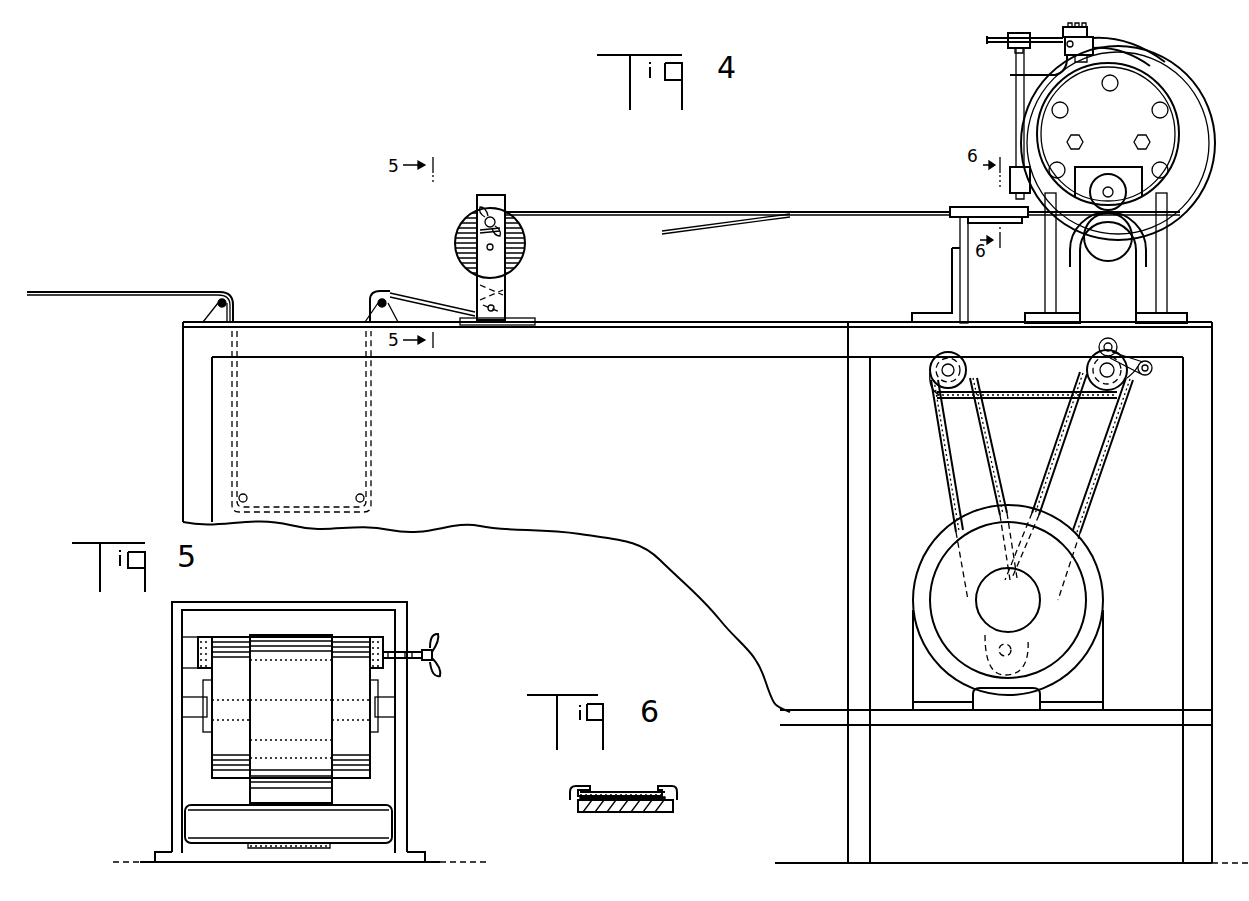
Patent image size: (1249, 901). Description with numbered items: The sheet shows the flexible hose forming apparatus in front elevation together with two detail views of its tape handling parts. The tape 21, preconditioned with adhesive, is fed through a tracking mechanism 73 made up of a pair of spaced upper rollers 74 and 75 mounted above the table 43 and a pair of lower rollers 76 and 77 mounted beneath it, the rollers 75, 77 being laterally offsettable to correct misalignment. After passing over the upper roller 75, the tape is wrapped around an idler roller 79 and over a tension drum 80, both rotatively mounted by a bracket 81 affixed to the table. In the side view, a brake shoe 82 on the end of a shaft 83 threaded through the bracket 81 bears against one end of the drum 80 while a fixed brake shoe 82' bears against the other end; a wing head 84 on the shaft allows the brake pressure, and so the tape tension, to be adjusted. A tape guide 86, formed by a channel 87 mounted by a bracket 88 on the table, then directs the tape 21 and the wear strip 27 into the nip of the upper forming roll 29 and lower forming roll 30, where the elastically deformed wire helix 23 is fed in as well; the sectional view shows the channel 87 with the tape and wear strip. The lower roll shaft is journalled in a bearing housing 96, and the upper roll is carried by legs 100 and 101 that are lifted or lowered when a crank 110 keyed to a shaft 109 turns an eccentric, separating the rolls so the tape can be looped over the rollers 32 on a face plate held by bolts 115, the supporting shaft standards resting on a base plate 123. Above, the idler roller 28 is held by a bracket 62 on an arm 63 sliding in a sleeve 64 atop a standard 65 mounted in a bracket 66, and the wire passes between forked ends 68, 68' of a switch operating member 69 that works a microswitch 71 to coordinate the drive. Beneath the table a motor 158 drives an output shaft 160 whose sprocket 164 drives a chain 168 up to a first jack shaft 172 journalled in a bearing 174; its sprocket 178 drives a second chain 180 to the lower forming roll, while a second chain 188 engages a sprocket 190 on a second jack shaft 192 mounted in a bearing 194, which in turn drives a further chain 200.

In FIG. 4, the flexible tape material 21 is at (70, 290).
In FIG. 5, the flexible tape material 21 is at (268, 645).
In FIG. 6, the flexible tape material 21 is at (630, 792).
In FIG. 4, the wire helix 23 is at (1200, 88).
In FIG. 4, the wear strip 27 is at (685, 231).
In FIG. 6, the wear strip 27 is at (680, 798).
In FIG. 4, the idler roller 28 is at (1086, 30).
In FIG. 4, the upper forming roll 29 is at (1108, 174).
In FIG. 4, the lower forming roll 30 is at (1108, 218).
In FIG. 4, the rollers 32 is at (1068, 109).
In FIG. 4, the table 43 is at (700, 323).
In FIG. 5, the table 43 is at (440, 862).
In FIG. 4, the bracket 62 is at (1067, 31).
In FIG. 4, the arm 63 is at (990, 44).
In FIG. 4, the sleeve 64 is at (1018, 33).
In FIG. 4, the standard 65 is at (1015, 99).
In FIG. 4, the bracket 66 is at (1016, 170).
In FIG. 4, the forked end 68 is at (1129, 38).
In FIG. 4, the forked end 68' is at (1130, 52).
In FIG. 4, the switch operating member 69 is at (1057, 54).
In FIG. 4, the microswitch 71 is at (1020, 75).
In FIG. 4, the tracking mechanism 73 is at (372, 405).
In FIG. 4, the upper roller 74 is at (212, 302).
In FIG. 4, the upper roller 75 is at (386, 300).
In FIG. 4, the lower roller 76 is at (245, 492).
In FIG. 4, the lower roller 77 is at (357, 492).
In FIG. 4, the idler roller 79 is at (478, 296).
In FIG. 5, the idler roller 79 is at (205, 812).
In FIG. 4, the tension drum 80 is at (520, 250).
In FIG. 5, the tension drum 80 is at (355, 765).
In FIG. 4, the bracket 81 is at (493, 196).
In FIG. 5, the bracket 81 is at (292, 602).
In FIG. 4, the brake shoe 82 is at (459, 234).
In FIG. 5, the brake shoe 82 is at (388, 654).
In FIG. 5, the fixed brake shoe 82' is at (171, 671).
In FIG. 5, the shaft 83 is at (415, 645).
In FIG. 4, the wing head 84 is at (480, 200).
In FIG. 5, the wing head 84 is at (440, 648).
In FIG. 4, the tape guide 86 is at (975, 203).
In FIG. 6, the tape guide 86 is at (566, 774).
In FIG. 4, the channel 87 is at (962, 210).
In FIG. 6, the channel 87 is at (662, 790).
In FIG. 4, the bracket 88 is at (950, 262).
In FIG. 6, the bracket 88 is at (635, 810).
In FIG. 4, the bearing housing 96 is at (1085, 284).
In FIG. 4, the leg 100 is at (1044, 258).
In FIG. 4, the leg 101 is at (1168, 250).
In FIG. 4, the shaft 109 is at (1108, 337).
In FIG. 4, the crank 110 is at (1125, 362).
In FIG. 4, the bolts 115 is at (1138, 134).
In FIG. 4, the base plate 123 is at (1178, 313).
In FIG. 4, the motor 158 is at (1092, 568).
In FIG. 4, the output shaft 160 is at (1008, 600).
In FIG. 4, the drive sprocket 164 is at (1026, 621).
In FIG. 4, the chain 168 is at (1105, 460).
In FIG. 4, the first jack shaft 172 is at (1095, 358).
In FIG. 4, the bearing 174 is at (1130, 380).
In FIG. 4, the sprocket 178 is at (1100, 400).
In FIG. 4, the second chain 180 is at (1085, 376).
In FIG. 4, the chain 188 is at (940, 465).
In FIG. 4, the sprocket 190 is at (962, 400).
In FIG. 4, the second jack shaft 192 is at (946, 360).
In FIG. 4, the bearing 194 is at (928, 385).
In FIG. 4, the chain 200 is at (1030, 400).